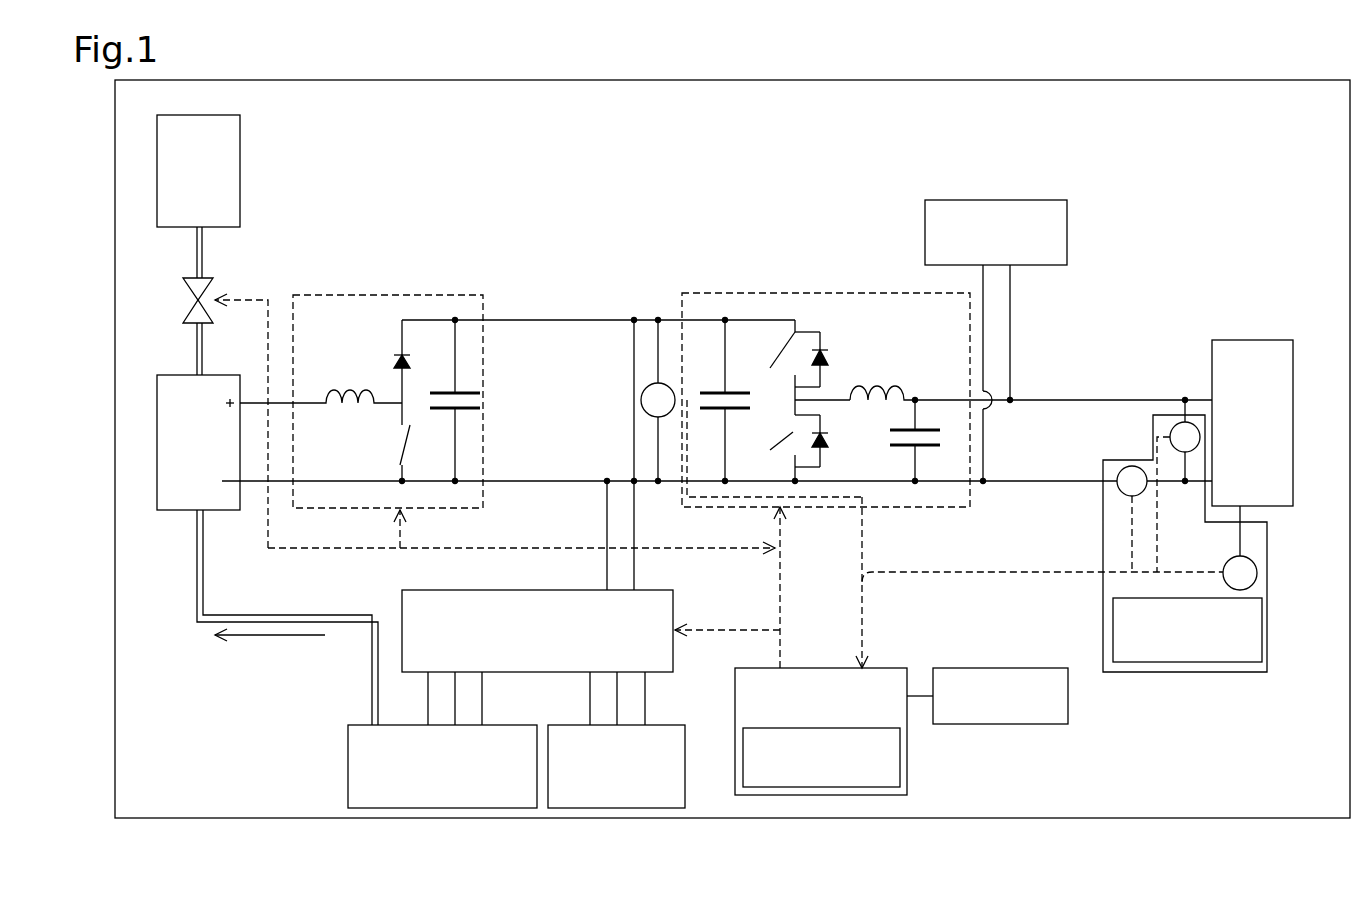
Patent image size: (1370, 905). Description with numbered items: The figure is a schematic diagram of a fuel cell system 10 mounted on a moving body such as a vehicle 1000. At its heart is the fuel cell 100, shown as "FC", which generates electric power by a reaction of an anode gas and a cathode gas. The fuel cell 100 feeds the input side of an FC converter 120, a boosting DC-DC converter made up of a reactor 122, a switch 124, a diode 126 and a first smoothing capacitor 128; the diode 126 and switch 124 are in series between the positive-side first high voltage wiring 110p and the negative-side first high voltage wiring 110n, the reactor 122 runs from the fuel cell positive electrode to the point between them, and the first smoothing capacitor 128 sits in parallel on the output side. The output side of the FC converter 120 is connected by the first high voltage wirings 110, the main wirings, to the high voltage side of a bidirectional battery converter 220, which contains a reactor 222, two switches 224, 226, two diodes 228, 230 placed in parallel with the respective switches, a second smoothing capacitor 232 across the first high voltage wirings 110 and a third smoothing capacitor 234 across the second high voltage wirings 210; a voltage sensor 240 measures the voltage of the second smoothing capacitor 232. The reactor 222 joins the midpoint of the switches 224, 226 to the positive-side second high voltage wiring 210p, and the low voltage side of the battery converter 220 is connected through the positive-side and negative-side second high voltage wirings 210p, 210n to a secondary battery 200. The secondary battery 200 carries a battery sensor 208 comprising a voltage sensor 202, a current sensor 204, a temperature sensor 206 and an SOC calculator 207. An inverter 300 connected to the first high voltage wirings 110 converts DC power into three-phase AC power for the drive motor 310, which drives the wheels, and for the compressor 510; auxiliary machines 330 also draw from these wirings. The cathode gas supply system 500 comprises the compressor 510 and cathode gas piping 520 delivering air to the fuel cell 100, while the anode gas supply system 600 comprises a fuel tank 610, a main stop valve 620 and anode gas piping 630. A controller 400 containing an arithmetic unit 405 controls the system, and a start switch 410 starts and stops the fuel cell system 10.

The vehicle 1000 is at (1312, 80).
The fuel cell system 10 is at (1137, 220).
The fuel cell 100 is at (205, 375).
The first high voltage wirings 110 is at (717, 400).
The positive-side first high voltage wiring 110p is at (613, 326).
The negative-side first high voltage wiring 110n is at (613, 476).
The FC converter 120 is at (424, 383).
The reactor 122 is at (330, 385).
The switch 124 is at (412, 430).
The diode 126 is at (394, 345).
The first smoothing capacitor 128 is at (470, 390).
The secondary battery 200 is at (1275, 340).
The voltage sensor 202 is at (1180, 398).
The current sensor 204 is at (1120, 490).
The temperature sensor 206 is at (1255, 560).
The SOC calculator 207 is at (1103, 610).
The battery sensor 208 is at (1175, 543).
The second high voltage wirings 210 is at (1170, 520).
The positive-side second high voltage wiring 210p is at (1033, 400).
The negative-side second high voltage wiring 210n is at (1020, 478).
The battery converter 220 is at (947, 367).
The reactor 222 is at (897, 372).
The switch 224 is at (775, 345).
The switch 226 is at (772, 450).
The diode 228 is at (828, 350).
The diode 230 is at (824, 450).
The second smoothing capacitor 232 is at (740, 393).
The third smoothing capacitor 234 is at (932, 455).
The voltage sensor 240 is at (662, 380).
The inverter 300 is at (673, 590).
The drive motor 310 is at (657, 725).
The auxiliary machines 330 is at (1030, 200).
The controller 400 is at (861, 717).
The arithmetic unit 405 is at (903, 755).
The start switch 410 is at (1022, 668).
The cathode gas supply system 500 is at (250, 730).
The compressor 510 is at (500, 725).
The cathode gas piping 520 is at (195, 580).
The anode gas supply system 600 is at (298, 188).
The fuel tank 610 is at (228, 115).
The main stop valve 620 is at (211, 278).
The anode gas piping 630 is at (193, 352).